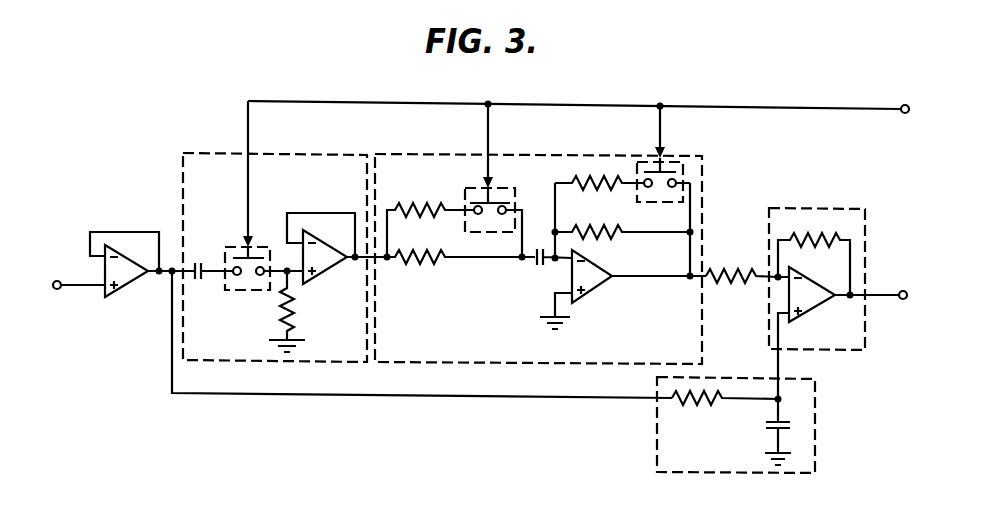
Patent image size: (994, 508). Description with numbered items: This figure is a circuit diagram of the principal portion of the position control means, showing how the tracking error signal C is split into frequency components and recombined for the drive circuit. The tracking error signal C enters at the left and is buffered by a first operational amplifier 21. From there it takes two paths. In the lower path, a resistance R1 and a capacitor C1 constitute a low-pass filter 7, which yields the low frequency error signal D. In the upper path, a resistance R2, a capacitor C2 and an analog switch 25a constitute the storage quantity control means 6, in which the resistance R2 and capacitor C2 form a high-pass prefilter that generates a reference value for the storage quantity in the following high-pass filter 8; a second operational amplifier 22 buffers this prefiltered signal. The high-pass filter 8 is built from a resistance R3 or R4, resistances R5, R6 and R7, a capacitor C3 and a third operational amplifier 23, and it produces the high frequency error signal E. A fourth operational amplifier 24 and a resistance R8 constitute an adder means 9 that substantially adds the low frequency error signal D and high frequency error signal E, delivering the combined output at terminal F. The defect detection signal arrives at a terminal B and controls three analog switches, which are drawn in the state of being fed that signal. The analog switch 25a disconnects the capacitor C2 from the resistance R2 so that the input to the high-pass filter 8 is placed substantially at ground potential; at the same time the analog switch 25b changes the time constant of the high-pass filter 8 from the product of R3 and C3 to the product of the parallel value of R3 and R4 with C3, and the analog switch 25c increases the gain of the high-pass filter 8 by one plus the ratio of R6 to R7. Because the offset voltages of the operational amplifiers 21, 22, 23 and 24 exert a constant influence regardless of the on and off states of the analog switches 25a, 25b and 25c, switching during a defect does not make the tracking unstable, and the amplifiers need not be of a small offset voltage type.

The storage quantity control means 6 is at (183, 180).
The low-pass filter 7 is at (818, 420).
The high-pass filter 8 is at (703, 342).
The adder means 9 is at (852, 207).
The first operational amplifier 21 is at (125, 287).
The second operational amplifier 22 is at (318, 264).
The third operational amplifier 23 is at (598, 289).
The fourth operational amplifier 24 is at (809, 300).
The analog switch 25a is at (226, 262).
The analog switch 25b is at (472, 190).
The analog switch 25c is at (633, 170).
The resistance R1 is at (702, 410).
The resistance R2 is at (279, 322).
The resistance R3 is at (415, 265).
The resistance R4 is at (416, 215).
The resistance R5 is at (607, 238).
The resistance R6 is at (730, 268).
The resistance R7 is at (590, 190).
The resistance R8 is at (806, 246).
The capacitor C1 is at (765, 428).
The capacitor C2 is at (200, 283).
The capacitor C3 is at (538, 272).
The terminal B is at (589, 110).
The tracking error signal C is at (70, 285).
The low frequency error signal D is at (770, 275).
The high frequency error signal E is at (776, 364).
The output terminal F is at (913, 295).